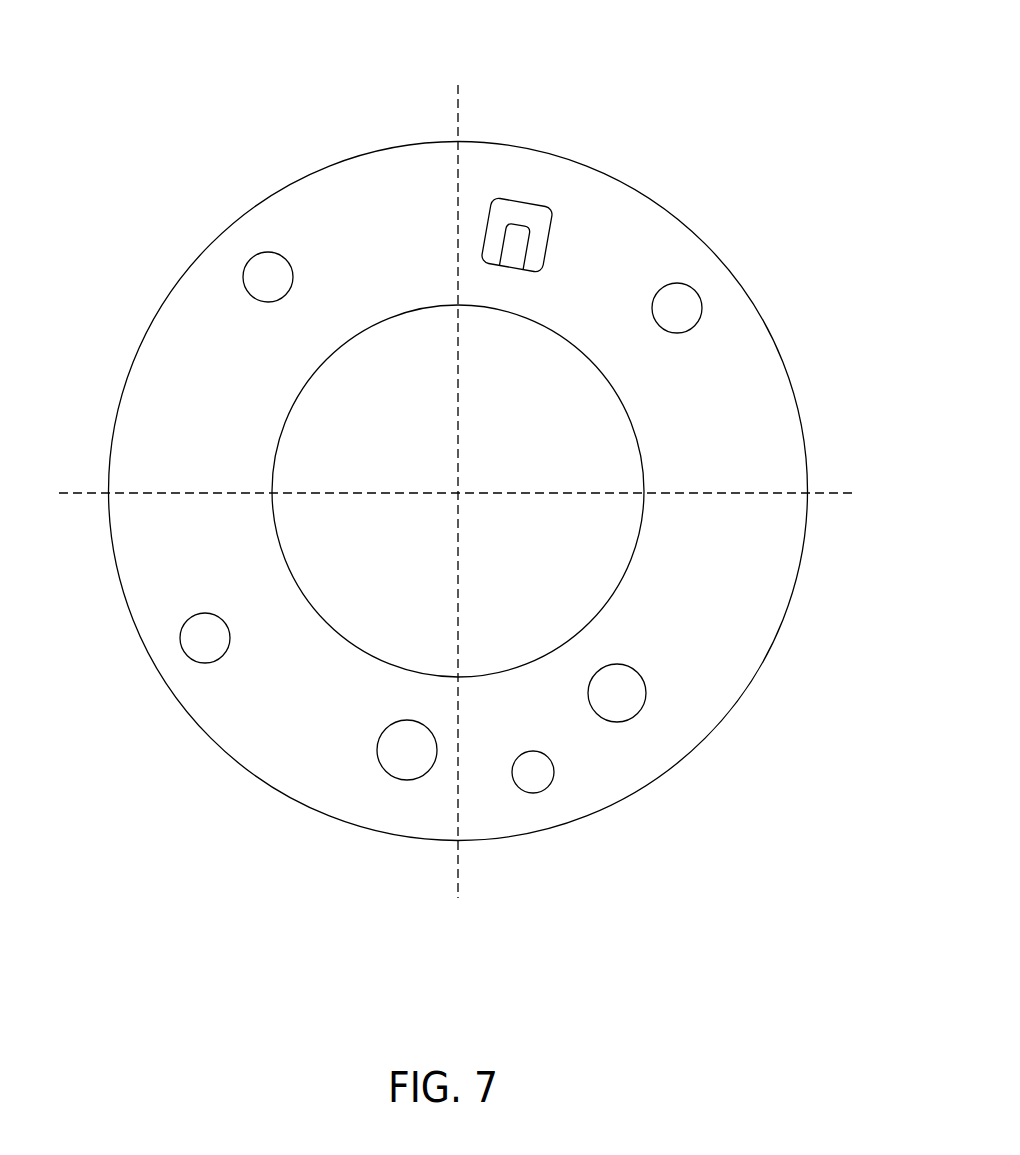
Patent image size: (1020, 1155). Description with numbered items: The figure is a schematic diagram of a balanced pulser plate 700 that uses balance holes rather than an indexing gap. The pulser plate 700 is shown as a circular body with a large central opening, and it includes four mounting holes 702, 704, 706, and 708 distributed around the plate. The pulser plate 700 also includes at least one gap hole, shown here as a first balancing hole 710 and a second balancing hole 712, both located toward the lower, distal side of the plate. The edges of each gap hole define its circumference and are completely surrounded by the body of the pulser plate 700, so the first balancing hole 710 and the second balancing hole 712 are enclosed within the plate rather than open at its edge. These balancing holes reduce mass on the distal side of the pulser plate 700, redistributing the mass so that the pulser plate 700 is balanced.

The pulser plate 700 is at (692, 60).
The mounting hole 702 is at (677, 283).
The mounting hole 704 is at (263, 252).
The mounting hole 706 is at (181, 643).
The mounting hole 708 is at (555, 770).
The first balancing hole 710 is at (383, 774).
The second balancing hole 712 is at (647, 693).